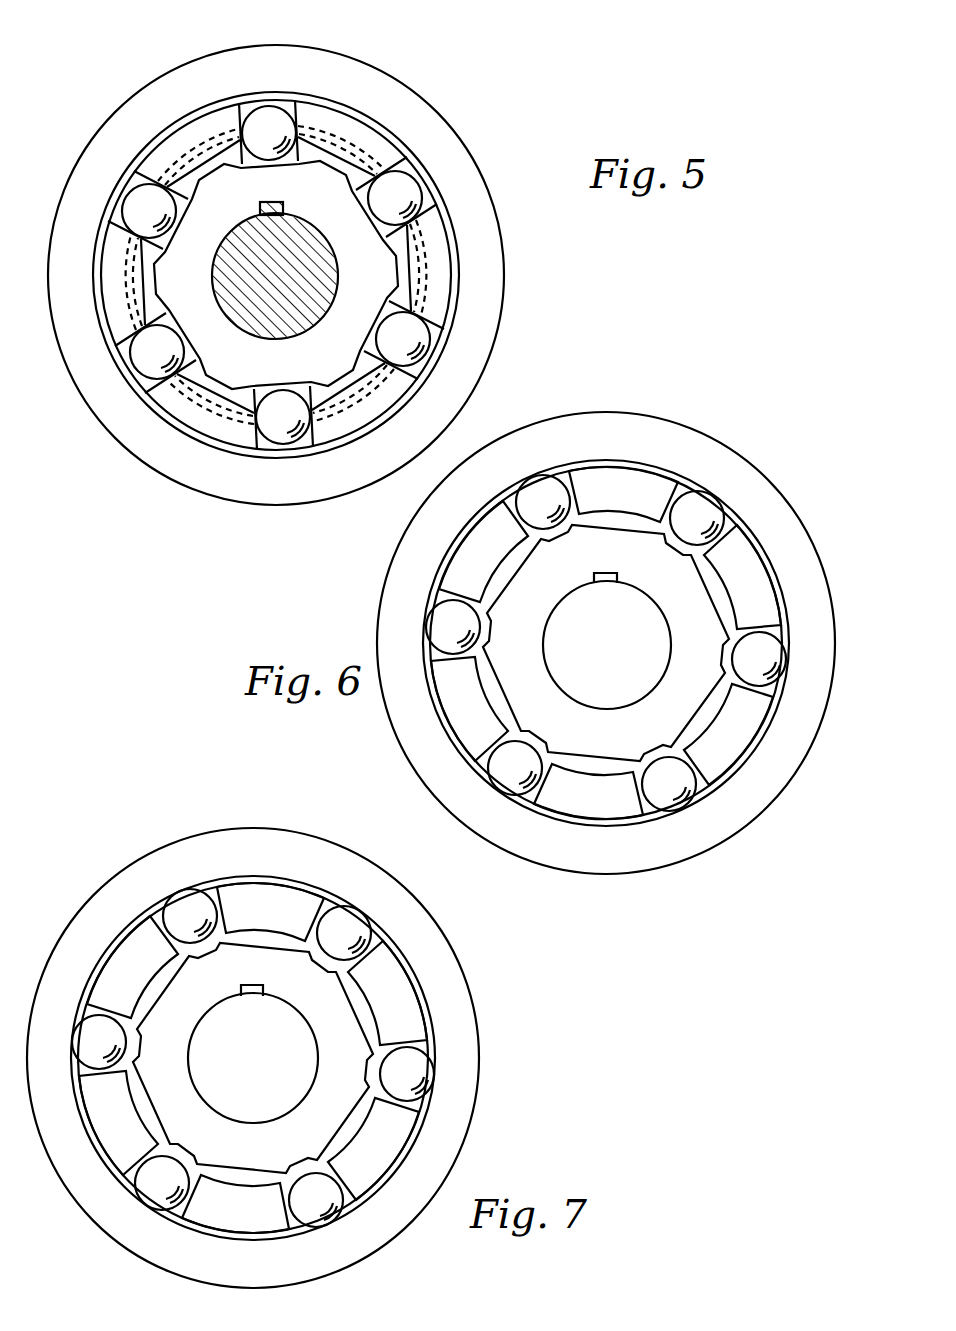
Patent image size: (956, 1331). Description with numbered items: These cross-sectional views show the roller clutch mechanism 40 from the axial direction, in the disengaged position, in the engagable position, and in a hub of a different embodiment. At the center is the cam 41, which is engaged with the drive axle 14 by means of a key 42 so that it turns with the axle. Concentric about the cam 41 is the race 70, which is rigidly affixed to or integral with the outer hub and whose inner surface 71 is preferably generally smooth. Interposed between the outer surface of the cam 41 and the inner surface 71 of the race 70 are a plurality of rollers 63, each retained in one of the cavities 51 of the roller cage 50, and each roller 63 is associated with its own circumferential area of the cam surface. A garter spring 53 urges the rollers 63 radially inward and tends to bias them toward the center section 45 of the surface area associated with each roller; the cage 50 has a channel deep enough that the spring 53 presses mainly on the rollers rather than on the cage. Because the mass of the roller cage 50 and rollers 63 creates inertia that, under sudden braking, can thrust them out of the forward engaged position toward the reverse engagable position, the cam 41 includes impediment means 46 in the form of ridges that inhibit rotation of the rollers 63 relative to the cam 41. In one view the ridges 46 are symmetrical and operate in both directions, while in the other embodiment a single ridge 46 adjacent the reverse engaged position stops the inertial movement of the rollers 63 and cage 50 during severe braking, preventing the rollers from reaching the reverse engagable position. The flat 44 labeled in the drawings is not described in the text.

In FIG. 5, the drive axle 14 is at (308, 268).
In FIG. 6, the drive axle 14 is at (652, 645).
In FIG. 7, the drive axle 14 is at (292, 1058).
In FIG. 5, the roller clutch mechanism 40 is at (484, 96).
In FIG. 5, the cam 41 is at (356, 229).
In FIG. 6, the cam 41 is at (526, 655).
In FIG. 7, the cam 41 is at (199, 1135).
In FIG. 5, the key 42 is at (271, 202).
In FIG. 6, the key 42 is at (606, 578).
In FIG. 7, the key 42 is at (258, 988).
In FIG. 5, the ramp surface 44 is at (161, 262).
In FIG. 6, the ramp surface 44 is at (546, 542).
In FIG. 7, the ramp surface 44 is at (128, 1062).
In FIG. 5, the center section 45 is at (308, 382).
In FIG. 6, the center section 45 is at (640, 749).
In FIG. 7, the center section 45 is at (342, 1090).
In FIG. 5, the impediment means 46 is at (226, 170).
In FIG. 6, the impediment means 46 is at (560, 525).
In FIG. 7, the impediment means 46 is at (172, 982).
In FIG. 5, the roller cage 50 is at (314, 106).
In FIG. 6, the roller cage 50 is at (615, 472).
In FIG. 7, the roller cage 50 is at (268, 905).
In FIG. 5, the cavities 51 is at (136, 192).
In FIG. 7, the cavities 51 is at (328, 1200).
In FIG. 5, the garter spring 53 is at (280, 425).
In FIG. 6, the garter spring 53 is at (518, 792).
In FIG. 7, the garter spring 53 is at (300, 1225).
In FIG. 5, the rollers 63 is at (402, 192).
In FIG. 6, the rollers 63 is at (541, 495).
In FIG. 7, the rollers 63 is at (183, 912).
In FIG. 5, the race 70 is at (486, 212).
In FIG. 6, the race 70 is at (724, 463).
In FIG. 7, the race 70 is at (444, 963).
In FIG. 5, the inner surface 71 is at (356, 106).
In FIG. 6, the inner surface 71 is at (755, 528).
In FIG. 7, the inner surface 71 is at (400, 941).